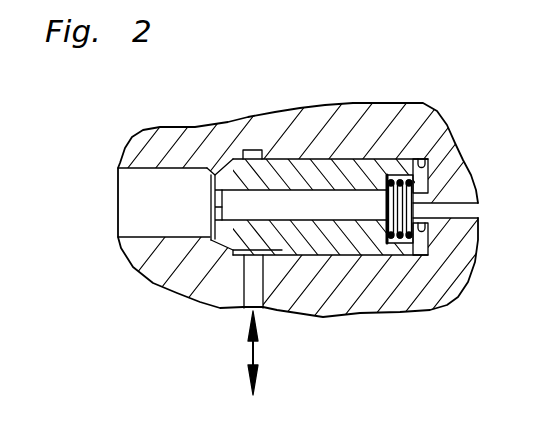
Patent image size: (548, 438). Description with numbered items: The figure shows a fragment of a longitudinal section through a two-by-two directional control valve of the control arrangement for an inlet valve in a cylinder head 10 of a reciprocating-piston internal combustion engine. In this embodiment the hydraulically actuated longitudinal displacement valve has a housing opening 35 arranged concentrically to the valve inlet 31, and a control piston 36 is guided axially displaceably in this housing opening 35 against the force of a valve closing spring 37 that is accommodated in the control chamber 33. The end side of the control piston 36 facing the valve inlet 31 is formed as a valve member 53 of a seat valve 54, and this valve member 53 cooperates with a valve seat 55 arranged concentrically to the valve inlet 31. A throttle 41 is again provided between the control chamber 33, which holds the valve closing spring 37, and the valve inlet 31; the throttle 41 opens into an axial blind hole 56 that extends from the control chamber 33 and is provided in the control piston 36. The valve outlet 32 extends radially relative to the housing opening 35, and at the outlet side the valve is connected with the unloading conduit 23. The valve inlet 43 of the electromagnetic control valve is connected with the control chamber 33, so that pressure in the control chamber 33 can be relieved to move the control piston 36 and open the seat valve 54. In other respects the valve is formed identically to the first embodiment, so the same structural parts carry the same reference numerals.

The cylinder head 10 is at (370, 150).
The unloading conduit 23 is at (125, 208).
The valve inlet 31 is at (207, 243).
The valve outlet 32 is at (229, 254).
The control chamber 33 is at (400, 250).
The housing opening 35 is at (418, 157).
The control piston 36 is at (313, 172).
The valve closing spring 37 is at (426, 257).
The throttle 41 is at (223, 248).
The valve inlet 43 is at (453, 207).
The valve member 53 is at (239, 163).
The seat valve 54 is at (205, 163).
The valve seat 55 is at (227, 168).
The axial blind hole 56 is at (268, 203).